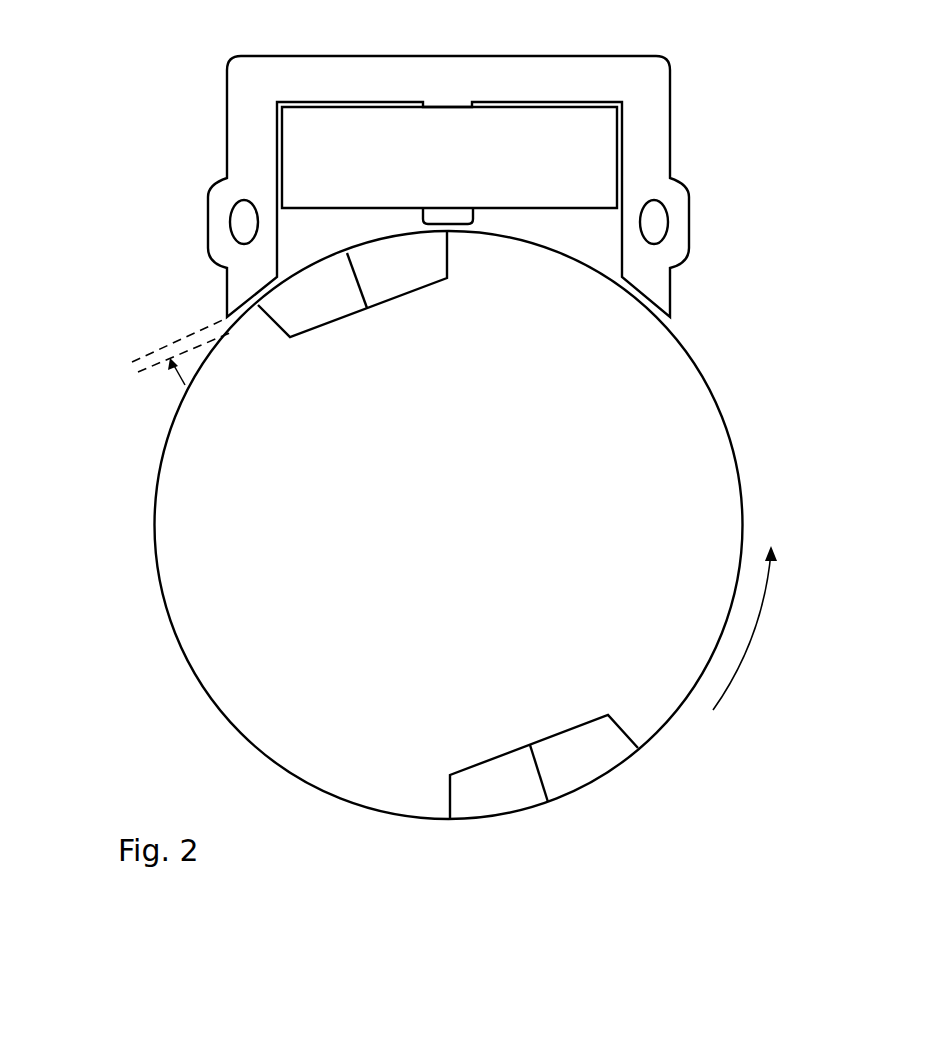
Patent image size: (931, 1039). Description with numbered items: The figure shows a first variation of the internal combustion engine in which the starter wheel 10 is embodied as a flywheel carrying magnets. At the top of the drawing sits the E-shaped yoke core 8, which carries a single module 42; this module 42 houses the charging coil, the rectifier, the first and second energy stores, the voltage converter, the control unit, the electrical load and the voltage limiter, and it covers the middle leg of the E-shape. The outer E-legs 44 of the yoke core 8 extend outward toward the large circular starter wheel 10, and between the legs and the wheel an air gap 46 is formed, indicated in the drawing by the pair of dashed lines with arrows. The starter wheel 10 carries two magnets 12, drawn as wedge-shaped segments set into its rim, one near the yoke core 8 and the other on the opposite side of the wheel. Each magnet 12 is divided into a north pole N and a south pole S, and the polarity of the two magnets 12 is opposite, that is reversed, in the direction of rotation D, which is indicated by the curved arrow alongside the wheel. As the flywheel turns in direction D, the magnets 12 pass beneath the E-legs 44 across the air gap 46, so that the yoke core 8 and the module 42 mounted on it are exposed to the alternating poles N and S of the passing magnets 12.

The yoke core 8 is at (297, 84).
The module 42 is at (553, 155).
The E-legs 44 is at (253, 270).
The air gap 46 is at (161, 345).
The starter wheel 10 is at (672, 435).
The magnets 12 is at (278, 332).
The north pole N is at (397, 268).
The south pole S is at (347, 300).
The direction of rotation D is at (748, 643).